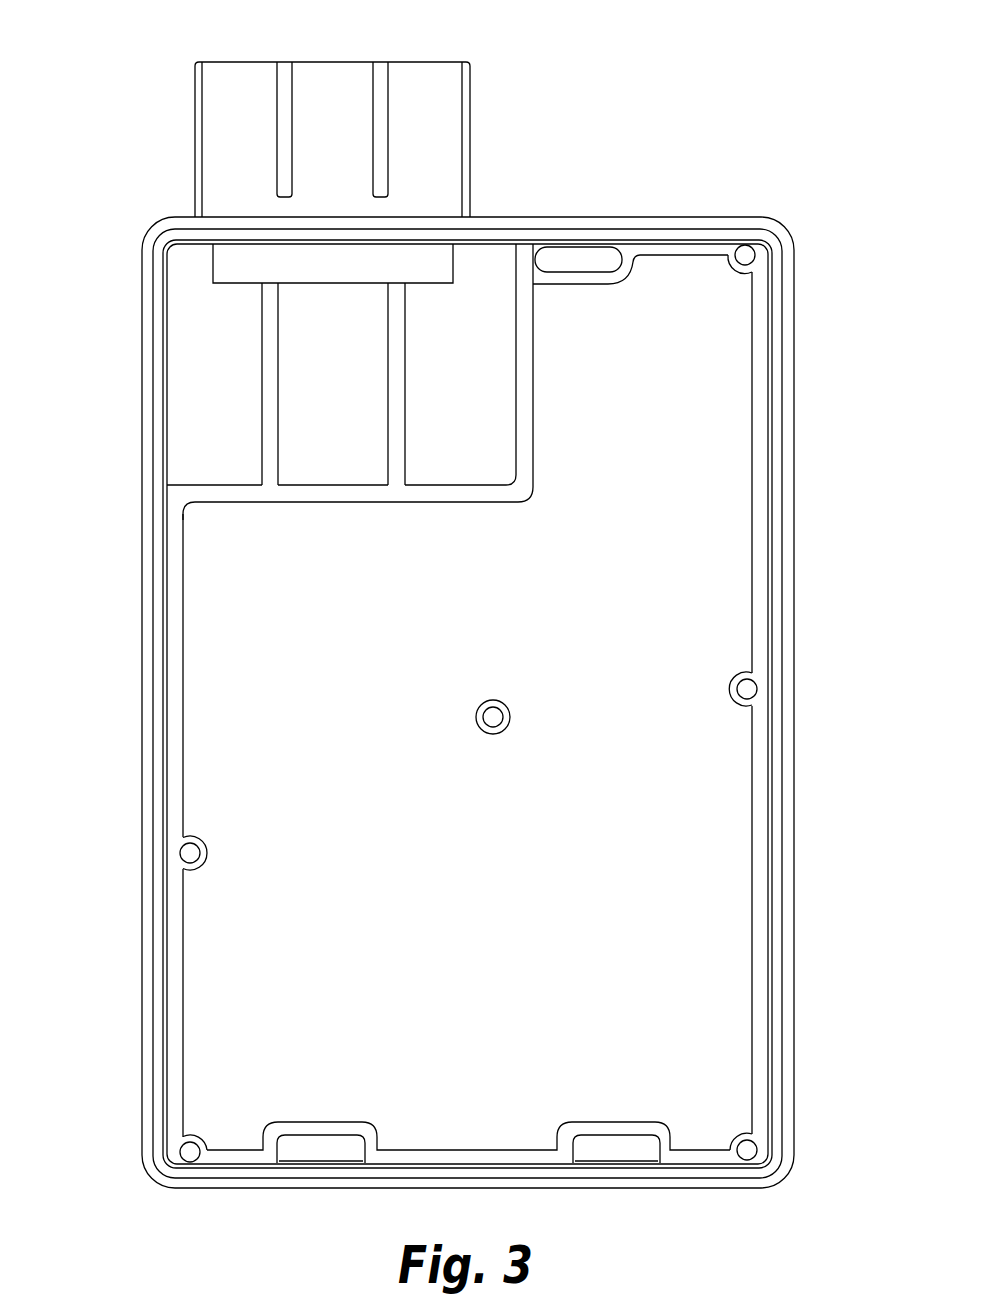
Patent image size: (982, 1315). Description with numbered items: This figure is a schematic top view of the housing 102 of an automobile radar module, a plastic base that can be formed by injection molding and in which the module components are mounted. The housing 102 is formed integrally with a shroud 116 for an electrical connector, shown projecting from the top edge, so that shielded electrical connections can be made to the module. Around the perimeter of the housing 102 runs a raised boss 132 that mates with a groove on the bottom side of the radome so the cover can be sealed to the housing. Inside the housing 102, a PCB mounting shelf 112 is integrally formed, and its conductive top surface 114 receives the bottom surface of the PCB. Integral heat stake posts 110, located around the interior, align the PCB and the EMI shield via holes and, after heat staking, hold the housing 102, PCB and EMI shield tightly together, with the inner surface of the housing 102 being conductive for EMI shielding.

The housing 102 is at (120, 287).
The heat stake posts 110 is at (738, 265).
The PCB mounting shelf 112 is at (185, 683).
The conductive top surface 114 is at (173, 582).
The shroud 116 is at (244, 62).
The raised boss 132 is at (714, 240).